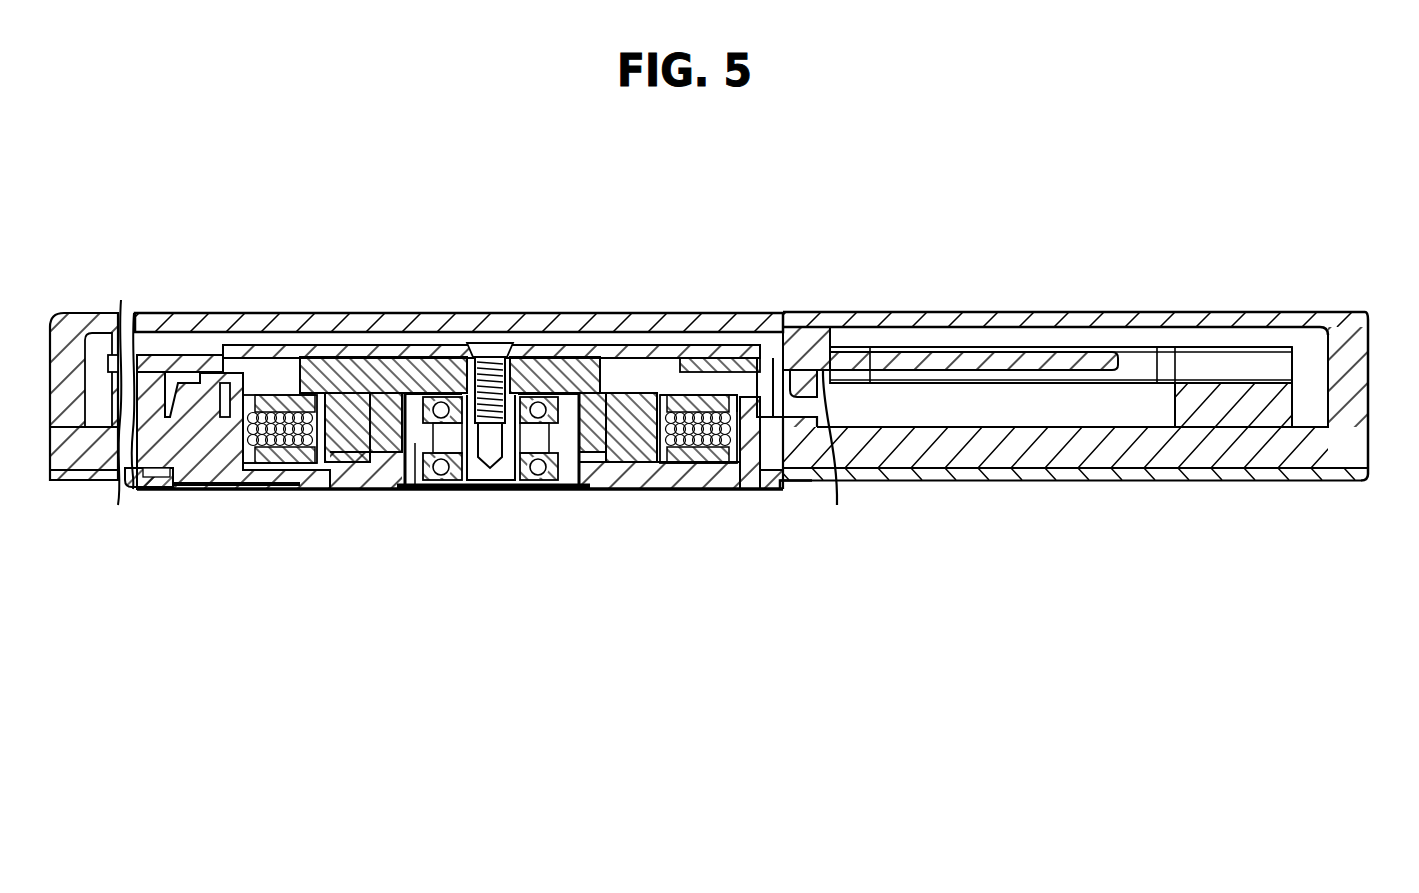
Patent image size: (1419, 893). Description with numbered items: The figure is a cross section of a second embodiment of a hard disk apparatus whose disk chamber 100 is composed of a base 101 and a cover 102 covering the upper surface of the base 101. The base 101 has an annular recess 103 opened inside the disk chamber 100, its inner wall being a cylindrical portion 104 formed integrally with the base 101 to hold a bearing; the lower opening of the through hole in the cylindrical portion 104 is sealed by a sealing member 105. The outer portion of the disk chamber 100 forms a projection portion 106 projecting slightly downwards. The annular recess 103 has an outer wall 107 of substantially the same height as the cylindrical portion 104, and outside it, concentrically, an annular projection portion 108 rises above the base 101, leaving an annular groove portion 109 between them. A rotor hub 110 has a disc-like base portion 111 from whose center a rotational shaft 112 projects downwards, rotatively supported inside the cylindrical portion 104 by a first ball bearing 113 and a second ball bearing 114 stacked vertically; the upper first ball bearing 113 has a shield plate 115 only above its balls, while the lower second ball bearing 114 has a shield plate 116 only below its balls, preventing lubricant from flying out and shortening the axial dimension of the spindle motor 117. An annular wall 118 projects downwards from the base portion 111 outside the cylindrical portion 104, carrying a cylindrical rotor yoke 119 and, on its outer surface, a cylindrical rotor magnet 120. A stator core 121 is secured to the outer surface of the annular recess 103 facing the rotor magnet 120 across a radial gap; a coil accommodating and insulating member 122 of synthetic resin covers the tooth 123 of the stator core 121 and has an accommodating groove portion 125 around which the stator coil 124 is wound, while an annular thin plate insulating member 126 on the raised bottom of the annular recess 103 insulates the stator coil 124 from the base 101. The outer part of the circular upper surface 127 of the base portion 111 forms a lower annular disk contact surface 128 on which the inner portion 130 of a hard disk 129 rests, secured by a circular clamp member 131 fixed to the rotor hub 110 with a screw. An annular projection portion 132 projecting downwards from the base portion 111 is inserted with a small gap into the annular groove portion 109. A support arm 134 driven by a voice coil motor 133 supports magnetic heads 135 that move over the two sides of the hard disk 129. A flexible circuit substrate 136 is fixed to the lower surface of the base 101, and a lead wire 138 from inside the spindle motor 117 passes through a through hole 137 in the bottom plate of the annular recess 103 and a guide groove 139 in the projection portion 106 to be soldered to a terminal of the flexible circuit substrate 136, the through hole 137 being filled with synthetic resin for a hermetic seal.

The disk chamber 100 is at (820, 333).
The base 101 is at (990, 455).
The cover 102 is at (1097, 322).
The annular recess 103 is at (380, 491).
The cylindrical portion 104 is at (413, 491).
The sealing member 105 is at (550, 491).
The projection portion 106 is at (327, 490).
The outer wall 107 is at (745, 491).
The annular projection portion 108 is at (812, 397).
The annular groove portion 109 is at (768, 483).
The rotor hub 110 is at (600, 490).
The base portion 111 is at (583, 358).
The rotational shaft 112 is at (497, 491).
The first ball bearing 113 is at (430, 392).
The second ball bearing 114 is at (522, 491).
The shield plate 115 is at (448, 392).
The shield plate 116 is at (457, 491).
The spindle motor 117 is at (163, 318).
The annular wall 118 is at (403, 491).
The rotor yoke 119 is at (378, 390).
The rotor magnet 120 is at (358, 393).
The stator core 121 is at (225, 383).
The coil accommodating and insulating member 122 is at (270, 395).
The tooth 123 is at (297, 491).
The stator coil 124 is at (328, 395).
The accommodating groove portion 125 is at (293, 395).
The annular thin plate insulating member 126 is at (668, 489).
The circular upper surface 127 is at (538, 392).
The disk contact surface 128 is at (678, 395).
The hard disk 129 is at (803, 340).
The inner portion 130 is at (722, 358).
The clamp member 131 is at (620, 368).
The annular projection portion 132 is at (767, 395).
The voice coil motor 133 is at (1220, 358).
The support arm 134 is at (982, 348).
The magnetic heads 135 is at (847, 335).
The flexible circuit substrate 136 is at (115, 481).
The through hole 137 is at (277, 491).
The lead wire 138 is at (183, 491).
The guide groove 139 is at (210, 491).